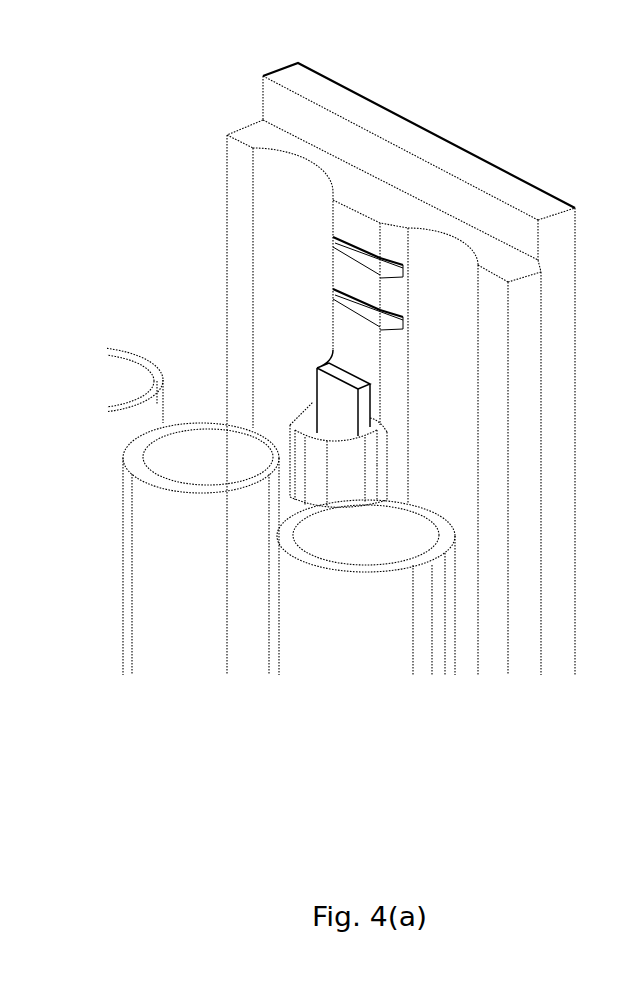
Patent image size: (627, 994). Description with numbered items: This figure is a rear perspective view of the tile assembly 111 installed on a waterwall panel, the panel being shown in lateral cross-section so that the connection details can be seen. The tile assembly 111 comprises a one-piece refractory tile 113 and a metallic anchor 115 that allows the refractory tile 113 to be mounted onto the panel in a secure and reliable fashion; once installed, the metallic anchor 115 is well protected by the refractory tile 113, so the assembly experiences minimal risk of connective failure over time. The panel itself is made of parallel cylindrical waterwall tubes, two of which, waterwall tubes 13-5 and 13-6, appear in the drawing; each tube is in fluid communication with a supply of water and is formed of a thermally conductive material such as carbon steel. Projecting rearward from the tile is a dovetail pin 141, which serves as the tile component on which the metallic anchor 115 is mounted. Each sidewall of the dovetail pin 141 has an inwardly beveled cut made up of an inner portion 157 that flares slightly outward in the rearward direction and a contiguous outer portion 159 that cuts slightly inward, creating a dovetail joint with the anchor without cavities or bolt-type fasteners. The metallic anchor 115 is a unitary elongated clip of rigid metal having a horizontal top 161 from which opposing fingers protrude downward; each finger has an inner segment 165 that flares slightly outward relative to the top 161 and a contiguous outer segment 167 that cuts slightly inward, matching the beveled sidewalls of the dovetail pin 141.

The tile assembly 111 is at (548, 127).
The refractory tile 113 is at (262, 92).
The metallic anchor 115 is at (270, 403).
The dovetail pin 141 is at (328, 390).
The inner portion 157 is at (372, 402).
The outer portion 159 is at (363, 412).
The top 161 is at (300, 483).
The inner segment 165 is at (368, 473).
The outer segment 167 is at (380, 445).
The waterwall tube 13-5 is at (197, 627).
The waterwall tube 13-6 is at (358, 632).